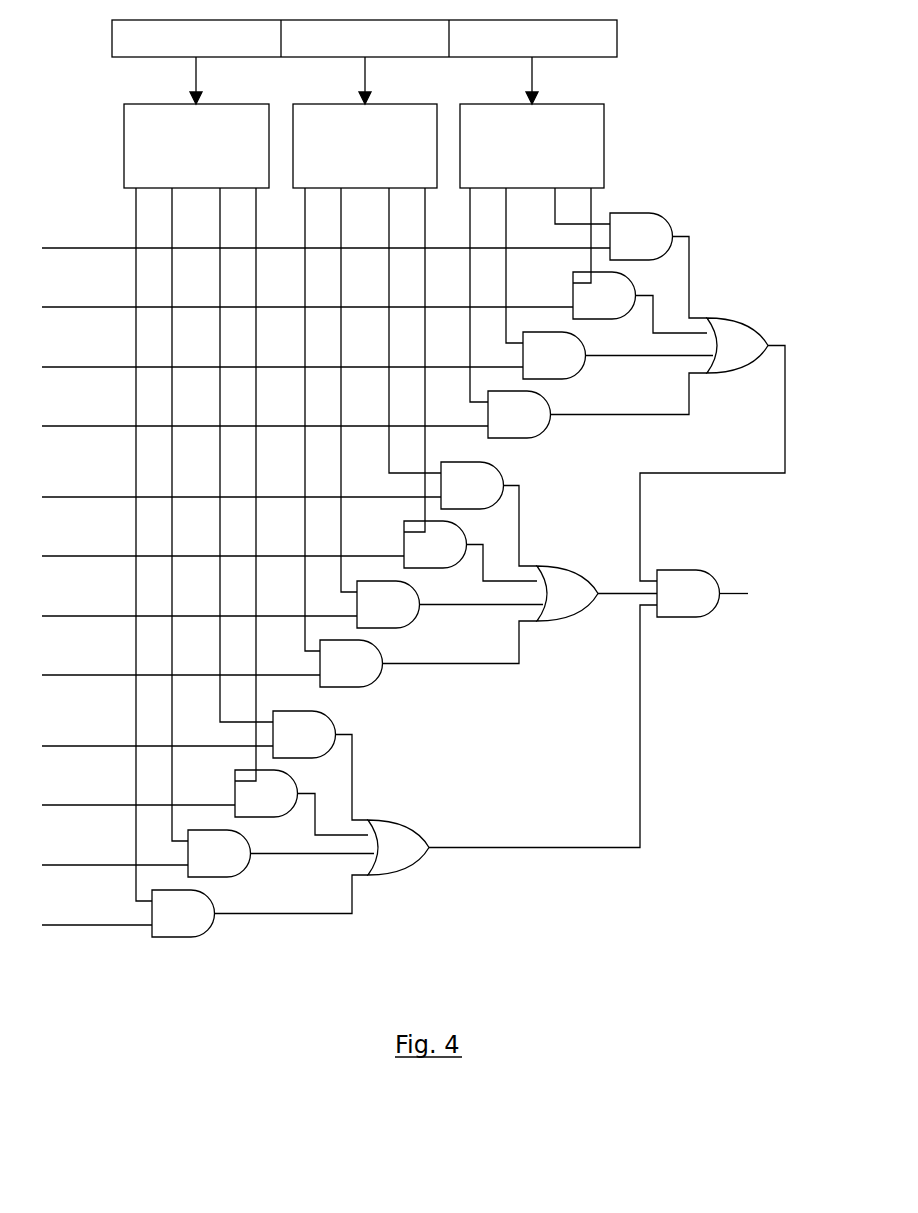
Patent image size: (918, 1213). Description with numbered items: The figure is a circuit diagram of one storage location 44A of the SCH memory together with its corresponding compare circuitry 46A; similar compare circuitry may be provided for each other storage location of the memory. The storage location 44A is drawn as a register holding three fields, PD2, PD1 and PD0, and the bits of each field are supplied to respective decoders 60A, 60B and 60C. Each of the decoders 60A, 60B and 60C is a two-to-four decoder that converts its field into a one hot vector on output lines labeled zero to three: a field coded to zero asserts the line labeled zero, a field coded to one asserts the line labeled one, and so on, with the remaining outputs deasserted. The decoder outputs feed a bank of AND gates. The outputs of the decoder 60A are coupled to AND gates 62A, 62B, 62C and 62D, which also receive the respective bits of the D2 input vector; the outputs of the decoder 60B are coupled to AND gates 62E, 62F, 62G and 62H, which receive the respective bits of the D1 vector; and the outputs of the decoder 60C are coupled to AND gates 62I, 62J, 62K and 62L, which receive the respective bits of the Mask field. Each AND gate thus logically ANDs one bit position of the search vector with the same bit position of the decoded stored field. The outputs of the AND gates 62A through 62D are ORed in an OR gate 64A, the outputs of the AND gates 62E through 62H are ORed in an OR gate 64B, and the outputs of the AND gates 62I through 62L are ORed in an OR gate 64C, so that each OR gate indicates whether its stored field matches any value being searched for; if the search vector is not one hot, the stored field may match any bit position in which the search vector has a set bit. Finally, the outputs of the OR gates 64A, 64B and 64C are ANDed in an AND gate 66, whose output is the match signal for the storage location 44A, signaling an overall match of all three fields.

The storage location 44A is at (418, 51).
The compare circuitry 46A is at (668, 126).
The decoder 60A is at (260, 126).
The decoder 60B is at (429, 126).
The decoder 60C is at (596, 126).
The AND gate 62A is at (200, 925).
The AND gate 62B is at (236, 865).
The AND gate 62C is at (284, 805).
The AND gate 62D is at (322, 746).
The AND gate 62E is at (366, 675).
The AND gate 62F is at (403, 616).
The AND gate 62G is at (453, 556).
The AND gate 62H is at (490, 497).
The AND gate 62I is at (530, 426).
The AND gate 62J is at (568, 367).
The AND gate 62K is at (621, 307).
The AND gate 62L is at (657, 248).
The OR gate 64A is at (417, 857).
The OR gate 64B is at (586, 603).
The OR gate 64C is at (757, 354).
The AND gate 66 is at (700, 603).